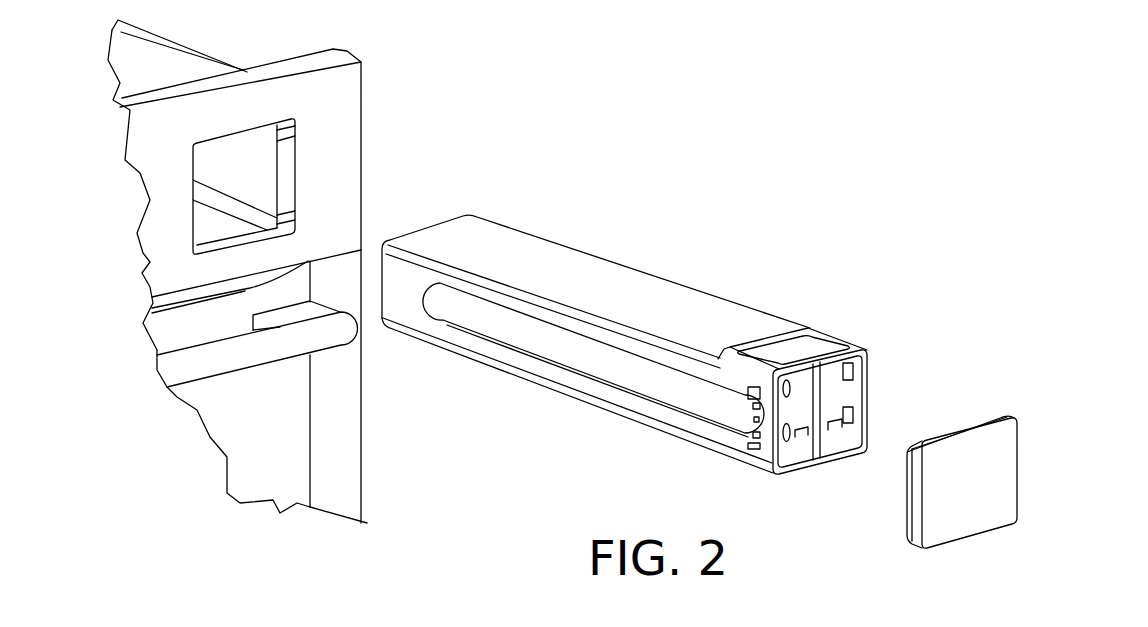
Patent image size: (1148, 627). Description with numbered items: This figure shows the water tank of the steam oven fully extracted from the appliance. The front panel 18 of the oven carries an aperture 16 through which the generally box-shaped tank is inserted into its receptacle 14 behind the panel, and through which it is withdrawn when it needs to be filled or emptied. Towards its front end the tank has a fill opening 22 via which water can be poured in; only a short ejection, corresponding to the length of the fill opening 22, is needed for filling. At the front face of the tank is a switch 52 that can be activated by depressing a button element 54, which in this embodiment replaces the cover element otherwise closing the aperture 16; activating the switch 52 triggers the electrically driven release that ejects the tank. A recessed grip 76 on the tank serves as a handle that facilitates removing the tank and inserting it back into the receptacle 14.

The receptacle 14 is at (252, 170).
The aperture 16 is at (287, 190).
The front panel 18 is at (347, 107).
The fill opening 22 is at (783, 350).
The switch 52 is at (823, 403).
The button element 54 is at (975, 463).
The recessed grip 76 is at (597, 365).